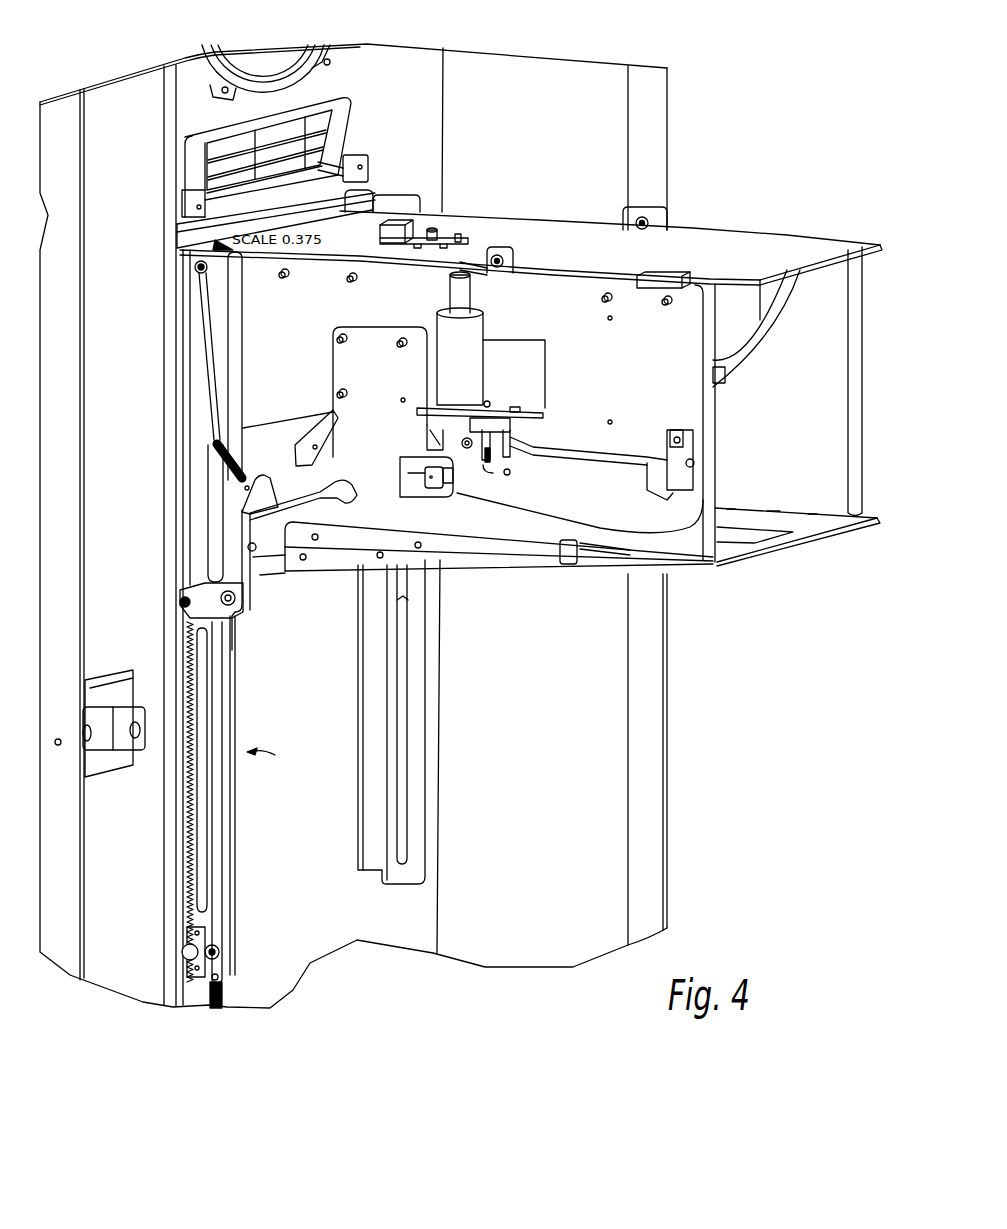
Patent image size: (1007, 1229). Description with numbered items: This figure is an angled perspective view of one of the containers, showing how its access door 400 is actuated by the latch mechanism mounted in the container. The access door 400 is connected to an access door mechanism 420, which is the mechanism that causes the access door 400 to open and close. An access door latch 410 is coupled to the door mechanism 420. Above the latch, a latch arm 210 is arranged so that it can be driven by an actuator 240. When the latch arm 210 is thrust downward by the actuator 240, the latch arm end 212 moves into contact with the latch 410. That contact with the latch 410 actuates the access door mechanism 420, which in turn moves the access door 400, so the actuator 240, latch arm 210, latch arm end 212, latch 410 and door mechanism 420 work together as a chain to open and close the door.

The latch arm 210 is at (563, 500).
The latch arm end 212 is at (289, 460).
The actuator 240 is at (486, 324).
The access door 400 is at (262, 577).
The access door latch 410 is at (312, 478).
The access door mechanism 420 is at (157, 593).